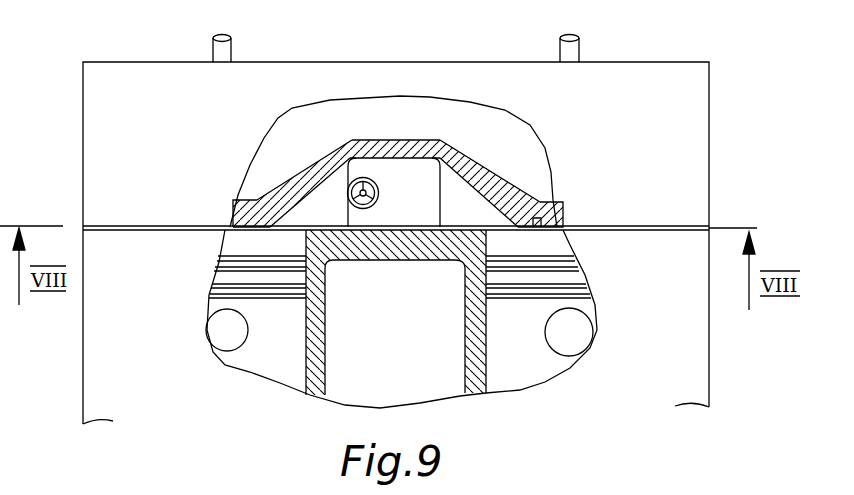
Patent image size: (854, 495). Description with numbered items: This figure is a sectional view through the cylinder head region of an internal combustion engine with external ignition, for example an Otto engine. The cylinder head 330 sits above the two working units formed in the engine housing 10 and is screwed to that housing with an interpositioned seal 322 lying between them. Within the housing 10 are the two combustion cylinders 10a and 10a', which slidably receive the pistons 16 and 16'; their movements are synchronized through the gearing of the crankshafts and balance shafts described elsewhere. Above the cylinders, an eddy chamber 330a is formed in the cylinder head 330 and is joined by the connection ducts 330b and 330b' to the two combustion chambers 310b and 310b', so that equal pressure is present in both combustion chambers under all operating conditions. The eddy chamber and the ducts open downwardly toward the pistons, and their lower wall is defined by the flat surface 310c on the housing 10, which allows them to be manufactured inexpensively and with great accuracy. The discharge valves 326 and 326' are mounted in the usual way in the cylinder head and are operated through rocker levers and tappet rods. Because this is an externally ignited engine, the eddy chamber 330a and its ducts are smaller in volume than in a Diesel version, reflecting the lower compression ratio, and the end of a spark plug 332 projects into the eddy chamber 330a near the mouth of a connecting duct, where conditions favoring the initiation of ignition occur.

The engine housing 10 is at (700, 385).
The combustion cylinder 10a is at (309, 351).
The combustion cylinder 10a' is at (490, 351).
The piston 16 is at (256, 333).
The piston 16' is at (540, 334).
The combustion chamber 310b is at (220, 211).
The combustion chamber 310b' is at (570, 213).
The flat surface 310c is at (457, 250).
The seal 322 is at (83, 226).
The discharge valve 326 is at (215, 31).
The discharge valve 326' is at (566, 31).
The cylinder head 330 is at (710, 150).
The eddy chamber 330a is at (413, 178).
The connection duct 330b is at (304, 183).
The connection duct 330b' is at (490, 183).
The spark plug 332 is at (370, 178).